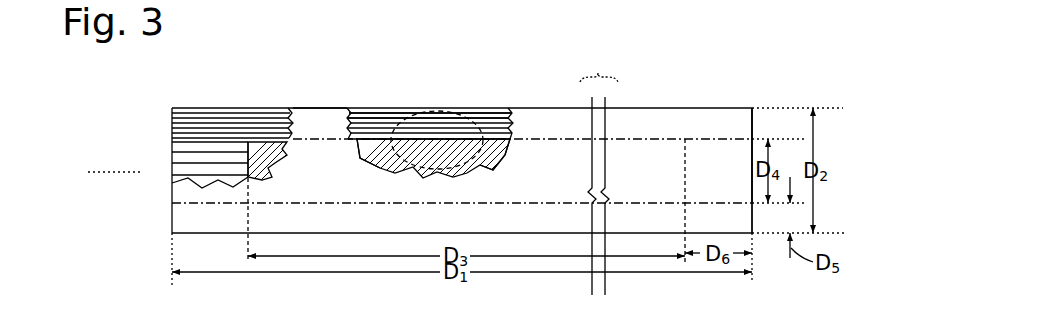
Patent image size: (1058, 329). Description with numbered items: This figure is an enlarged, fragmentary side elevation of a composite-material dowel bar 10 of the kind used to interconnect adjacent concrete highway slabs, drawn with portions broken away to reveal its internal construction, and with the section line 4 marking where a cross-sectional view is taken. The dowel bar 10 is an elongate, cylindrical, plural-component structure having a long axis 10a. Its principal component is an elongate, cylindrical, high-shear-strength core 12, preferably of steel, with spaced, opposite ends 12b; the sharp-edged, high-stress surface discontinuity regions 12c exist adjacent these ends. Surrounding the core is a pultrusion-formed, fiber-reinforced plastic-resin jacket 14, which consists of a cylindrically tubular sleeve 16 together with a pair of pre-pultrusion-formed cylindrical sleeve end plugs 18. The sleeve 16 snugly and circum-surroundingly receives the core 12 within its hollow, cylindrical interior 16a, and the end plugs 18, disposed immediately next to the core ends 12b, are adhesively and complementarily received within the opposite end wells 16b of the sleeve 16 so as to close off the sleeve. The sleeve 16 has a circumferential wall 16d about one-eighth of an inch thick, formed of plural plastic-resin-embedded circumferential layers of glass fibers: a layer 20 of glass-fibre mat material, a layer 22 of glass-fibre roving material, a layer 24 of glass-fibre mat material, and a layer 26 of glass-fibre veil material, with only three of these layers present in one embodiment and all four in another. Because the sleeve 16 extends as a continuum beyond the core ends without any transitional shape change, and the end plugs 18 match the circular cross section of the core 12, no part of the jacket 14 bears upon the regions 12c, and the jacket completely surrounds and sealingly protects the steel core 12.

The dowel bar 10 is at (591, 45).
The long axis of dowel bar 10a is at (878, 168).
The core 12 is at (455, 180).
The ends of core 12b is at (243, 147).
The surface discontinuity regions 12c is at (248, 203).
The jacket 14 is at (313, 100).
The sleeve 16 is at (300, 227).
The interior of sleeve 16a is at (498, 161).
The end wells of sleeve 16b is at (190, 195).
The circumferential wall 16d is at (196, 158).
The sleeve end plugs 18 is at (172, 181).
The layer of glass-fibre mat material 20 is at (373, 168).
The layer of glass-fibre roving material 22 is at (356, 152).
The layer of glass-fibre mat material 24 is at (490, 118).
The layer of glass-fibre veil material 26 is at (481, 114).
The section line 4- 4 is at (399, 105).